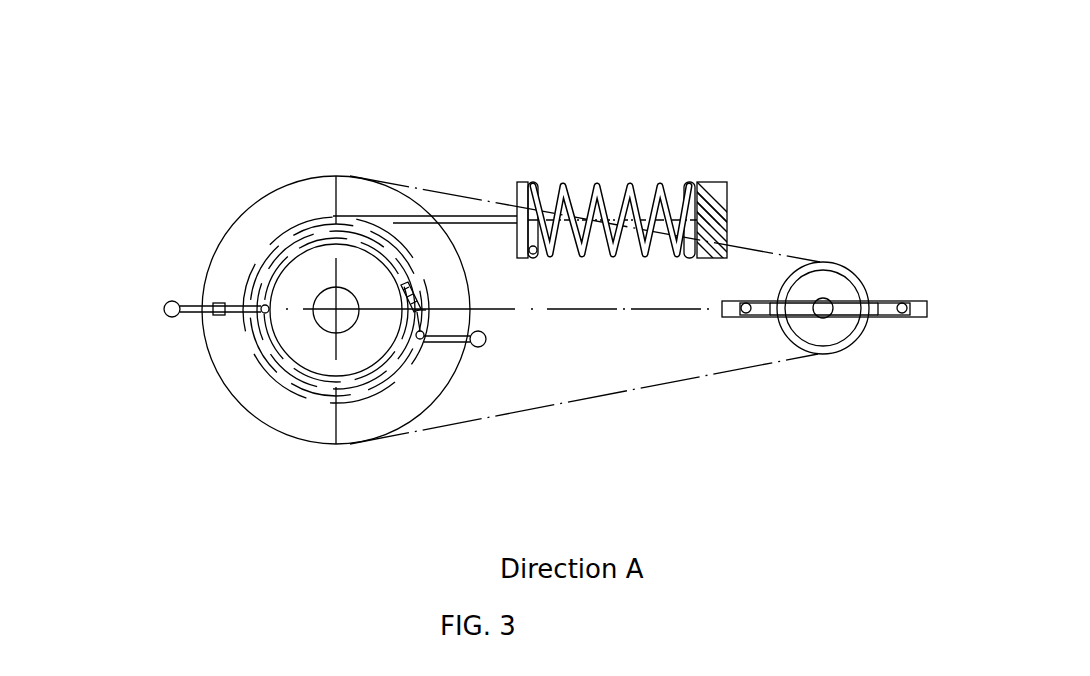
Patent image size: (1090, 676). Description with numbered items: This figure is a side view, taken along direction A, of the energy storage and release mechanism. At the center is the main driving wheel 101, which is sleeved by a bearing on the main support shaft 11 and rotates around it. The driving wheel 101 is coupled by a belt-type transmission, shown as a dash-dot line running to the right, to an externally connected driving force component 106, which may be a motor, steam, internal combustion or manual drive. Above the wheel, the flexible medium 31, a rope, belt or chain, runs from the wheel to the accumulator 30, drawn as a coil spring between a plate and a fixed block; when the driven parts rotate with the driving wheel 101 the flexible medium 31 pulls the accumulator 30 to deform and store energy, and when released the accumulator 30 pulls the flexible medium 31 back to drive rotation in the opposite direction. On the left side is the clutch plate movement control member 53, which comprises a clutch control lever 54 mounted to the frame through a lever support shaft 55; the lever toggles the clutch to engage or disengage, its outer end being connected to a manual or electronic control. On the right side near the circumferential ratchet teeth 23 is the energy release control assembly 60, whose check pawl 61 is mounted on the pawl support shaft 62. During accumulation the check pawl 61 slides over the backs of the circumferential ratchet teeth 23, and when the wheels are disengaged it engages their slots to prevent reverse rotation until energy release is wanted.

The driving wheel 101 is at (275, 202).
The main support shaft 11 is at (327, 323).
The circumferential ratchet teeth 23 is at (409, 283).
The flexible medium 31 is at (452, 213).
The accumulator 30 is at (642, 177).
The driving force component 106 is at (825, 278).
The clutch plate movement control member 53 is at (122, 439).
The clutch control lever 54 is at (167, 319).
The lever support shaft 55 is at (217, 316).
The energy release control assembly 60 is at (498, 483).
The check pawl 61 is at (452, 345).
The pawl support shaft 62 is at (422, 347).